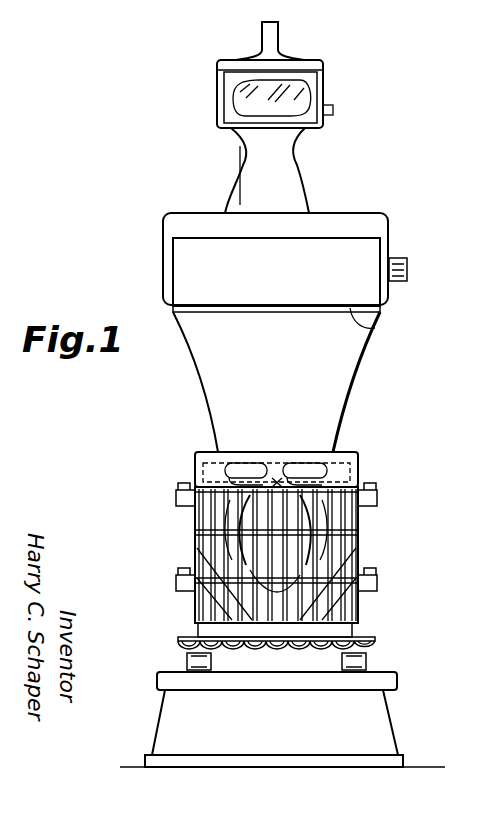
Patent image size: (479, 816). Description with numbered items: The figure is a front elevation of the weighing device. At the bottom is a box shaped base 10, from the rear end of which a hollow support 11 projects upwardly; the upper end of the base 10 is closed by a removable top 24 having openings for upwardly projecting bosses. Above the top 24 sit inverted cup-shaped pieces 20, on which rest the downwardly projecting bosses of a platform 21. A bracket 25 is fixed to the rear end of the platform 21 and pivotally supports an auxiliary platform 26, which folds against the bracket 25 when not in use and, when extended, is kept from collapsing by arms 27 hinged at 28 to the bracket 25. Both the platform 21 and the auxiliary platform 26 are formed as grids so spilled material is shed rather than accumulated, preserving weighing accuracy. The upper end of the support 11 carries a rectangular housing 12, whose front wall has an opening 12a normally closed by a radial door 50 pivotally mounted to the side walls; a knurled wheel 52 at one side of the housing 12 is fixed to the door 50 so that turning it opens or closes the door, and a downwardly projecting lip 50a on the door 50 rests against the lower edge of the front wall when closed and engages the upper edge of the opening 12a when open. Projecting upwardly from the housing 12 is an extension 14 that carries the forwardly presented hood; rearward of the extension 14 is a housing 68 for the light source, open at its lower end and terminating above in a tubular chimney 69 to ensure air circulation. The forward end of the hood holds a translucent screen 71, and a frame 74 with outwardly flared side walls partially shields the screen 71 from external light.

The box shaped base 10 is at (380, 725).
The hollow support 11 is at (230, 400).
The rectangular housing 12 is at (376, 222).
The opening 12a is at (198, 238).
The extension 14 is at (316, 63).
The inverted cup-shaped pieces 20 is at (186, 660).
The platform 21 is at (372, 643).
The removable top 24 is at (162, 678).
The bracket 25 is at (192, 590).
The auxiliary platform 26 is at (200, 470).
The arms 27 is at (232, 521).
The hinge 28 is at (175, 490).
The radial door 50 is at (188, 270).
The lip 50a is at (375, 328).
The knurled wheel 52 is at (410, 265).
The housing 68 is at (240, 173).
The tubular extension or chimney 69 is at (270, 34).
The translucent screen 71 is at (292, 116).
The frame 74 is at (218, 116).